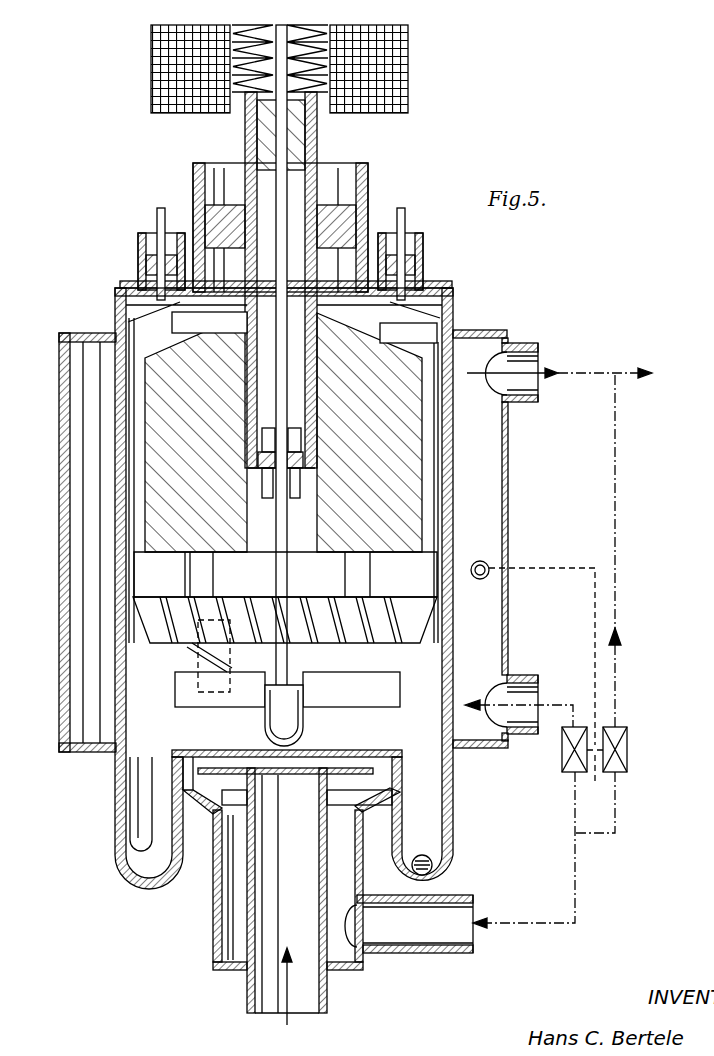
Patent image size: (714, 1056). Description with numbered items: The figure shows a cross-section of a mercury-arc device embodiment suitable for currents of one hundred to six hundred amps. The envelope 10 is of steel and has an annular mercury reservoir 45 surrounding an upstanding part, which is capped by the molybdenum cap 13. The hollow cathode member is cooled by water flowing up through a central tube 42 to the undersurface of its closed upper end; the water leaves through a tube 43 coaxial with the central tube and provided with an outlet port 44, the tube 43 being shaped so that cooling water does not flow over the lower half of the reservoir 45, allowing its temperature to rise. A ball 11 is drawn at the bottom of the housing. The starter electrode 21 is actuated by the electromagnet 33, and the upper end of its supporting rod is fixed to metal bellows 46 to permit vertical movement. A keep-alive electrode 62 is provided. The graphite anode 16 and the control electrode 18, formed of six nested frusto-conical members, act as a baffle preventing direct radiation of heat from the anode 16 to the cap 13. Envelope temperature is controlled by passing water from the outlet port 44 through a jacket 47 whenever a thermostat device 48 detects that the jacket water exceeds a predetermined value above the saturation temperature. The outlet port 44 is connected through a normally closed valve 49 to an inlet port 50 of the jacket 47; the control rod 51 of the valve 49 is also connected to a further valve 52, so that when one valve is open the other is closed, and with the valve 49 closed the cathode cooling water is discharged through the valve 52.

The envelope 10 is at (453, 298).
The ball 11 is at (432, 866).
The molybdenum cap 13 is at (228, 750).
The anode 16 is at (410, 438).
The control electrode 18 is at (389, 597).
The starter electrode 21 is at (296, 728).
The electromagnet 33 is at (410, 80).
The central tube 42 is at (312, 1000).
The tube 43 is at (362, 840).
The outlet port 44 is at (432, 938).
The mercury reservoir 45 is at (140, 853).
The metal bellows 46 is at (247, 90).
The jacket 47 is at (495, 539).
The thermostat device 48 is at (490, 566).
The valve 49 is at (567, 742).
The inlet port 50 is at (535, 693).
The control rod 51 is at (539, 850).
The further valve 52 is at (610, 603).
The keep-alive electrode 62 is at (207, 698).